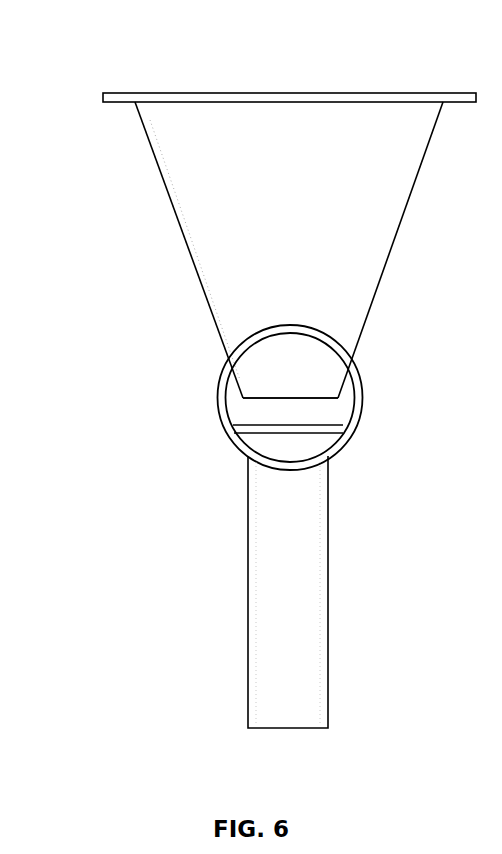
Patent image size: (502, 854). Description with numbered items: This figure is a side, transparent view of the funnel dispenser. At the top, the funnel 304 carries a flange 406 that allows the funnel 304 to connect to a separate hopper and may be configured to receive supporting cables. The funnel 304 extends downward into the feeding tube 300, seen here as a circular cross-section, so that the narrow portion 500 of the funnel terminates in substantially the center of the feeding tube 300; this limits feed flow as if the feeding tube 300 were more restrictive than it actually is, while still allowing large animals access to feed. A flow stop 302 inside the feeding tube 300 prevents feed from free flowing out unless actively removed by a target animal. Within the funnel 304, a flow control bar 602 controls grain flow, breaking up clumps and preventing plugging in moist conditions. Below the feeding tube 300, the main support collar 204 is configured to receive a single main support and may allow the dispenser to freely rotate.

The flange 406 is at (108, 93).
The funnel 304 is at (155, 155).
The flow control bar 602 is at (285, 278).
The feeding tube 300 is at (218, 385).
The narrow portion 500 is at (325, 385).
The flow stop 302 is at (308, 427).
The main support collar 204 is at (259, 713).